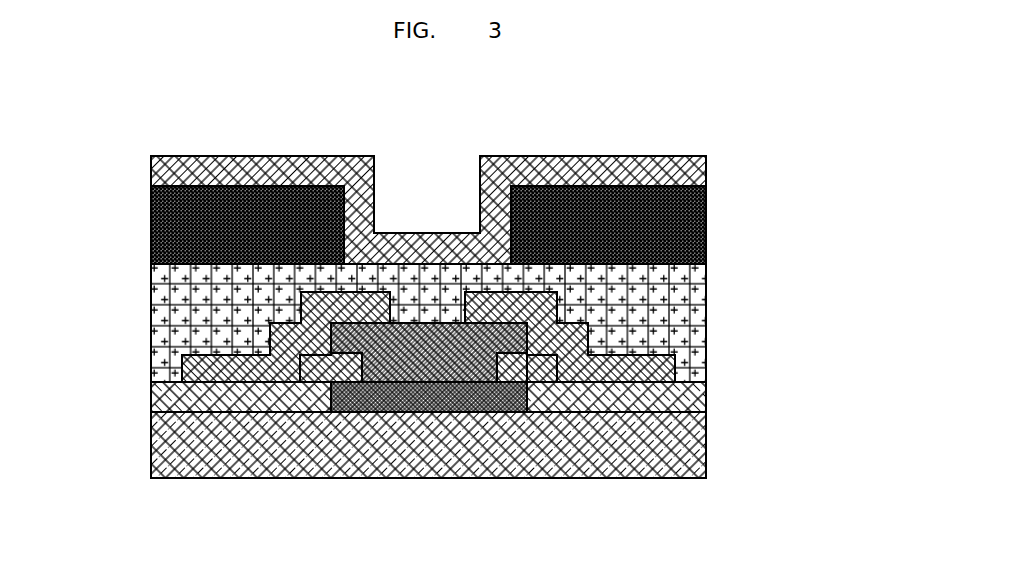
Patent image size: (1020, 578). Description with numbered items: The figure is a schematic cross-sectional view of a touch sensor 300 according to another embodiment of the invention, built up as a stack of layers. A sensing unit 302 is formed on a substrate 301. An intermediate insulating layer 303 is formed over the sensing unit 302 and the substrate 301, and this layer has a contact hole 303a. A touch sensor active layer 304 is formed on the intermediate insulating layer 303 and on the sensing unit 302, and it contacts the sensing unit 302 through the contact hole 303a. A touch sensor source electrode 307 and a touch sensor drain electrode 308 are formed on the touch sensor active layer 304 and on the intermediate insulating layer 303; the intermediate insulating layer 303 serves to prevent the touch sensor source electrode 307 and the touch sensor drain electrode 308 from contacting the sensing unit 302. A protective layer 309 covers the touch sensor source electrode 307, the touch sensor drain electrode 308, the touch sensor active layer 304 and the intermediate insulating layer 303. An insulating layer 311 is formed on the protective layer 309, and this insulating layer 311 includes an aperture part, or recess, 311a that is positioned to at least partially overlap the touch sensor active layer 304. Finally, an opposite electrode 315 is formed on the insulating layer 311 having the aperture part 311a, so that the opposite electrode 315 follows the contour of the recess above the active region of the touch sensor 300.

The touch sensor 300 is at (429, 302).
The substrate 301 is at (690, 443).
The sensing unit 302 is at (472, 400).
The intermediate insulating layer 303 is at (692, 397).
The contact hole 303a is at (363, 368).
The touch sensor active layer 304 is at (417, 362).
The touch sensor source electrode 307 is at (197, 372).
The touch sensor drain electrode 308 is at (687, 372).
The protective layer 309 is at (690, 295).
The insulating layer 311 is at (692, 220).
The aperture part 311a is at (378, 198).
The opposite electrode 315 is at (692, 172).